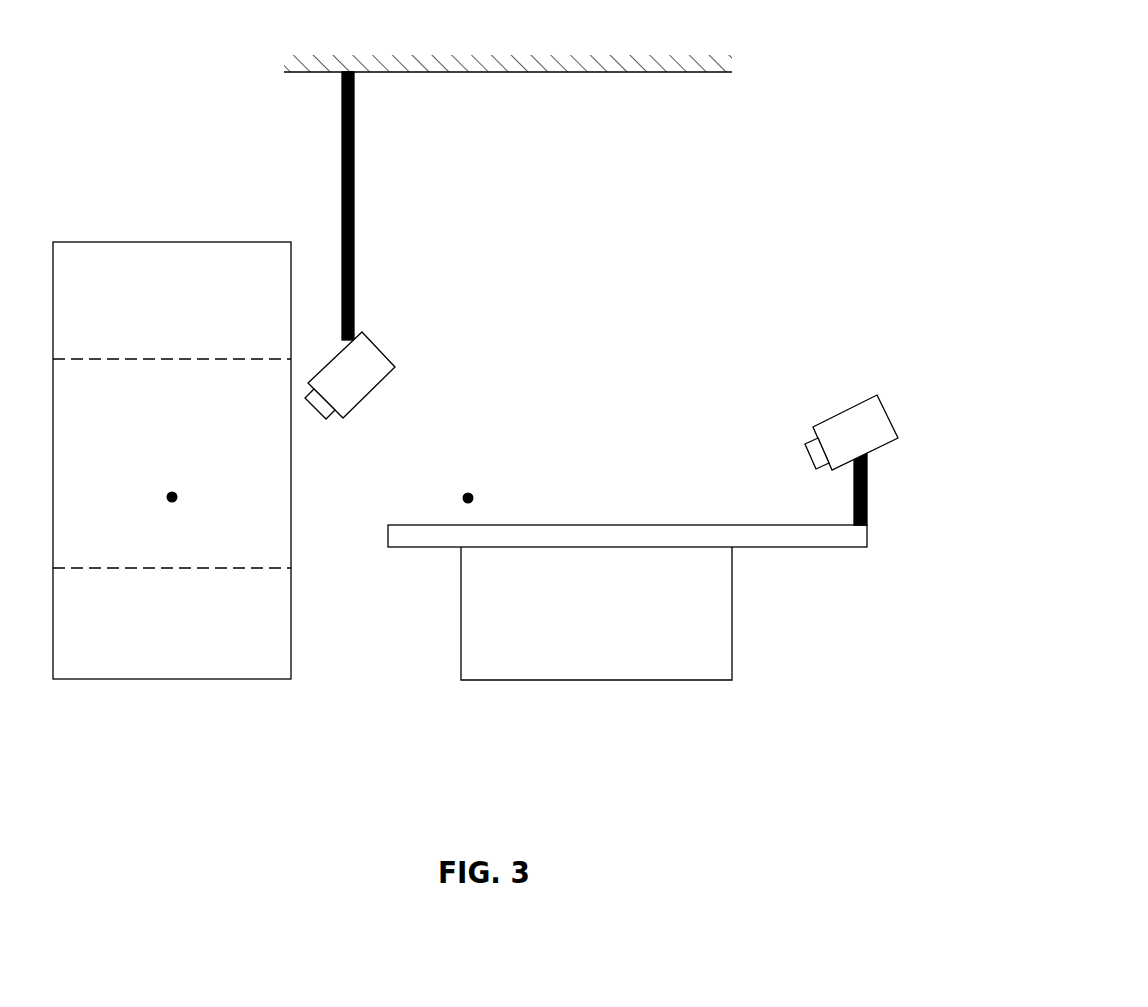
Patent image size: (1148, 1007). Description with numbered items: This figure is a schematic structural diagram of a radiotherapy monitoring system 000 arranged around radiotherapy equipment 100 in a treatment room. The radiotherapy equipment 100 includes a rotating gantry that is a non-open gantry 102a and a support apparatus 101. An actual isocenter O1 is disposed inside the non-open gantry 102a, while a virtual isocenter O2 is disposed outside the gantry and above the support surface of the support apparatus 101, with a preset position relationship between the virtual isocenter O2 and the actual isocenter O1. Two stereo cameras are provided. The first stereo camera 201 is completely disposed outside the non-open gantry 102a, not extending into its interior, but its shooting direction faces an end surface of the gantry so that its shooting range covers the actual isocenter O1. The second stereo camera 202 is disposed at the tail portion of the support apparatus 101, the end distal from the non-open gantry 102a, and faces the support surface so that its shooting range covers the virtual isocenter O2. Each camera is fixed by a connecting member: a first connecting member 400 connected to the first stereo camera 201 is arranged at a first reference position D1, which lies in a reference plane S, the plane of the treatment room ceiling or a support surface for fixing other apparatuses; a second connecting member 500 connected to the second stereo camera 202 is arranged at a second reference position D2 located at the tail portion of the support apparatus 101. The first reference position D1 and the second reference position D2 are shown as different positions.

The radiotherapy monitoring system 000 is at (92, 40).
The reference plane S is at (468, 86).
The first reference position D1 is at (345, 70).
The first connecting member 400 is at (362, 145).
The first stereo camera 201 is at (372, 377).
The non-open gantry 102a is at (246, 653).
The actual isocenter O1 is at (172, 478).
The virtual isocenter O2 is at (468, 482).
The support apparatus 101 is at (492, 654).
The radiotherapy equipment 100 is at (493, 757).
The second connecting member 500 is at (875, 490).
The second stereo camera 202 is at (831, 428).
The second reference position D2 is at (860, 527).